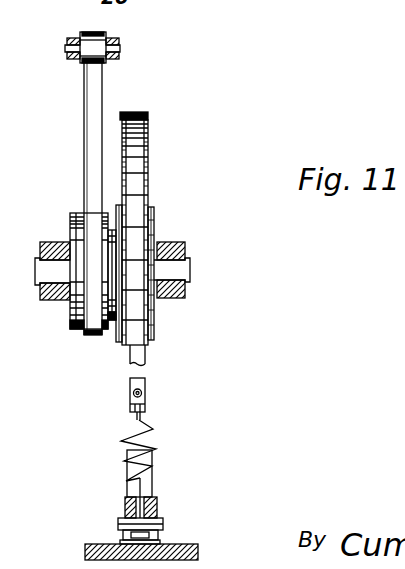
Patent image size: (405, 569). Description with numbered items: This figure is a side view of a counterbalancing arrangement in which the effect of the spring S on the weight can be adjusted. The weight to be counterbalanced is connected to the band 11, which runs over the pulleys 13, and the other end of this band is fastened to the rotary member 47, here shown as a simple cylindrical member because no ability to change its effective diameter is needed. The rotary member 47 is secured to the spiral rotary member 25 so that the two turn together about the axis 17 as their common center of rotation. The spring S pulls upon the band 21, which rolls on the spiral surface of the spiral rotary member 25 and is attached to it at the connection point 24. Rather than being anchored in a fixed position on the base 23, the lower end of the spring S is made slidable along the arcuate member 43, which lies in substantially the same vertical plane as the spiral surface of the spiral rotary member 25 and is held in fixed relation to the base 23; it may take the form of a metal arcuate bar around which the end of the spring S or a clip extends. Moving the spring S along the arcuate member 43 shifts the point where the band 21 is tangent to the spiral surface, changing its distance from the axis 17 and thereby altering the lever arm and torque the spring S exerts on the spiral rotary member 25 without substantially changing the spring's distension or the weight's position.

The band 11 is at (95, 127).
The pulleys 13 is at (92, 43).
The axis 17 is at (182, 272).
The band 21 is at (140, 378).
The base 23 is at (187, 542).
The connection point 24 is at (135, 115).
The spiral rotary member 25 is at (150, 184).
The arcuate member 43 is at (128, 516).
The rotary member 47 is at (70, 311).
The spring S is at (152, 456).